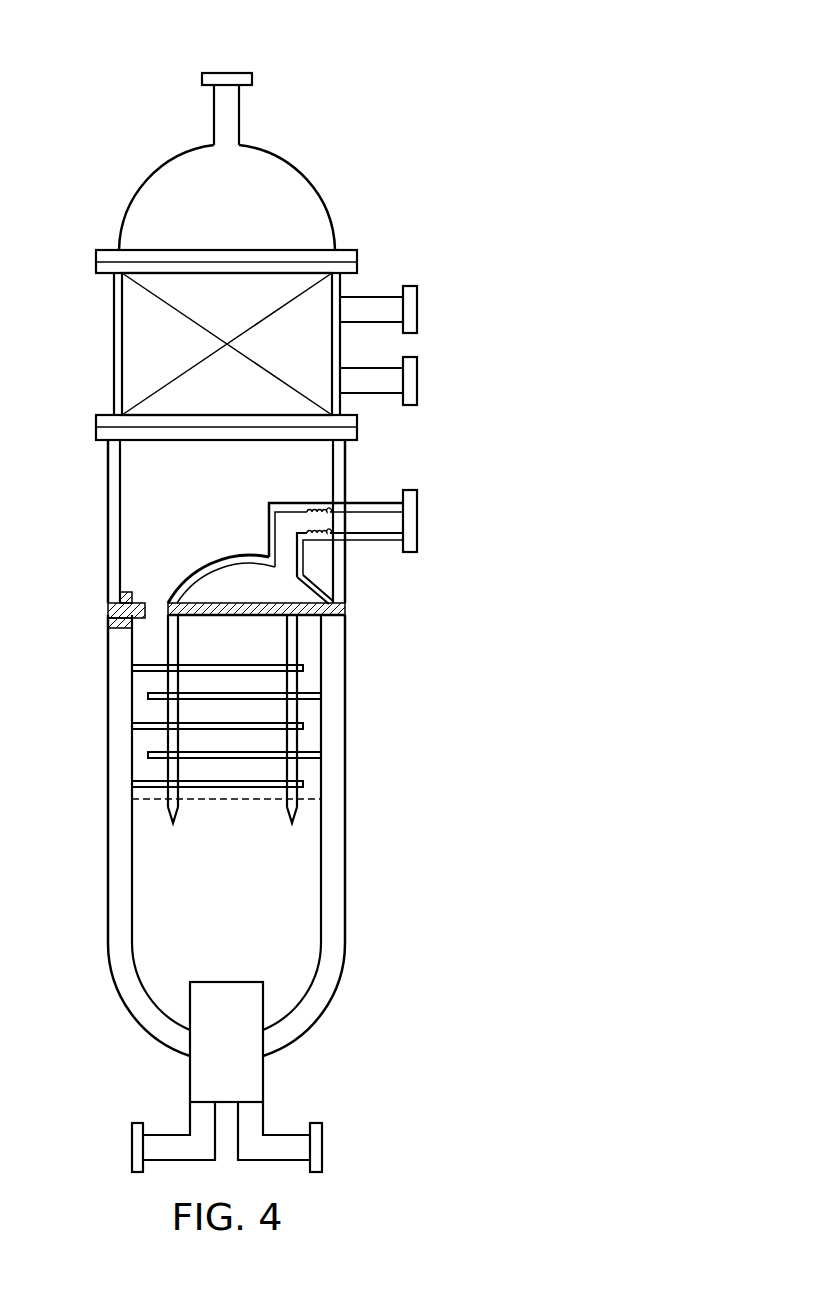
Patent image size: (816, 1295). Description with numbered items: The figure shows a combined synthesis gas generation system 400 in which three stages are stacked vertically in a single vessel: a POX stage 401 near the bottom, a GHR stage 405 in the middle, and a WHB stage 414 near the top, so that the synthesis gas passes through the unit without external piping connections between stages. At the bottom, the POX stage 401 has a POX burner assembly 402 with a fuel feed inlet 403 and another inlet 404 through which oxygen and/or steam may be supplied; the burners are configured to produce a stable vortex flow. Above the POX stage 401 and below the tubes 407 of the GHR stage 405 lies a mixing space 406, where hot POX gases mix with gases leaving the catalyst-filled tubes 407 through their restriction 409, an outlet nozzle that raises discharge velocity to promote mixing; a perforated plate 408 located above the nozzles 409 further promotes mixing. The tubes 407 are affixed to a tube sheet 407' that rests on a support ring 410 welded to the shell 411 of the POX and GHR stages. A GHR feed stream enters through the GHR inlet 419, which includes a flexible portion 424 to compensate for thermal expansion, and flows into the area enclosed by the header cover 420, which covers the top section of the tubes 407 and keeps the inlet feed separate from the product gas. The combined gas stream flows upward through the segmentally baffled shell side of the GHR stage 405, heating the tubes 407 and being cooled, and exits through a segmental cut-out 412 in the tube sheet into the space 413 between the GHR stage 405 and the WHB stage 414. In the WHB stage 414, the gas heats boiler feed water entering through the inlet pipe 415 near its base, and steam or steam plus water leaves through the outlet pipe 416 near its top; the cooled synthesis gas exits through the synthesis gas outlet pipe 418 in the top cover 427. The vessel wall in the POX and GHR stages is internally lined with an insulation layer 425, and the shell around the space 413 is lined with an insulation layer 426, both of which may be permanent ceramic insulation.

The synthesis gas generation system 400 is at (147, 60).
The POX stage 401 is at (208, 937).
The POX burner assembly 402 is at (264, 1077).
The fuel feed inlet 403 is at (322, 1148).
The other inlet 404 is at (132, 1148).
The GHR stage 405 is at (150, 710).
The mixing space 406 is at (208, 836).
The tubes 407 is at (232, 717).
The tube sheet 407' is at (232, 605).
The perforated plate 408 is at (303, 812).
The restriction 409 is at (172, 824).
The support ring 410 is at (107, 622).
The shell 411 is at (345, 718).
The segmental cut-out 412 is at (156, 613).
The space 413 is at (154, 492).
The WHB stage 414 is at (208, 311).
The boiler feed-water inlet pipe 415 is at (418, 376).
The outlet steam pipe 416 is at (418, 305).
The synthesis gas outlet pipe 418 is at (225, 72).
The GHR inlet 419 is at (418, 511).
The header cover 420 is at (202, 585).
The flexible portion 424 is at (297, 513).
The insulation layer 425 is at (330, 977).
The insulation layer 426 is at (107, 525).
The top cover 427 is at (225, 441).